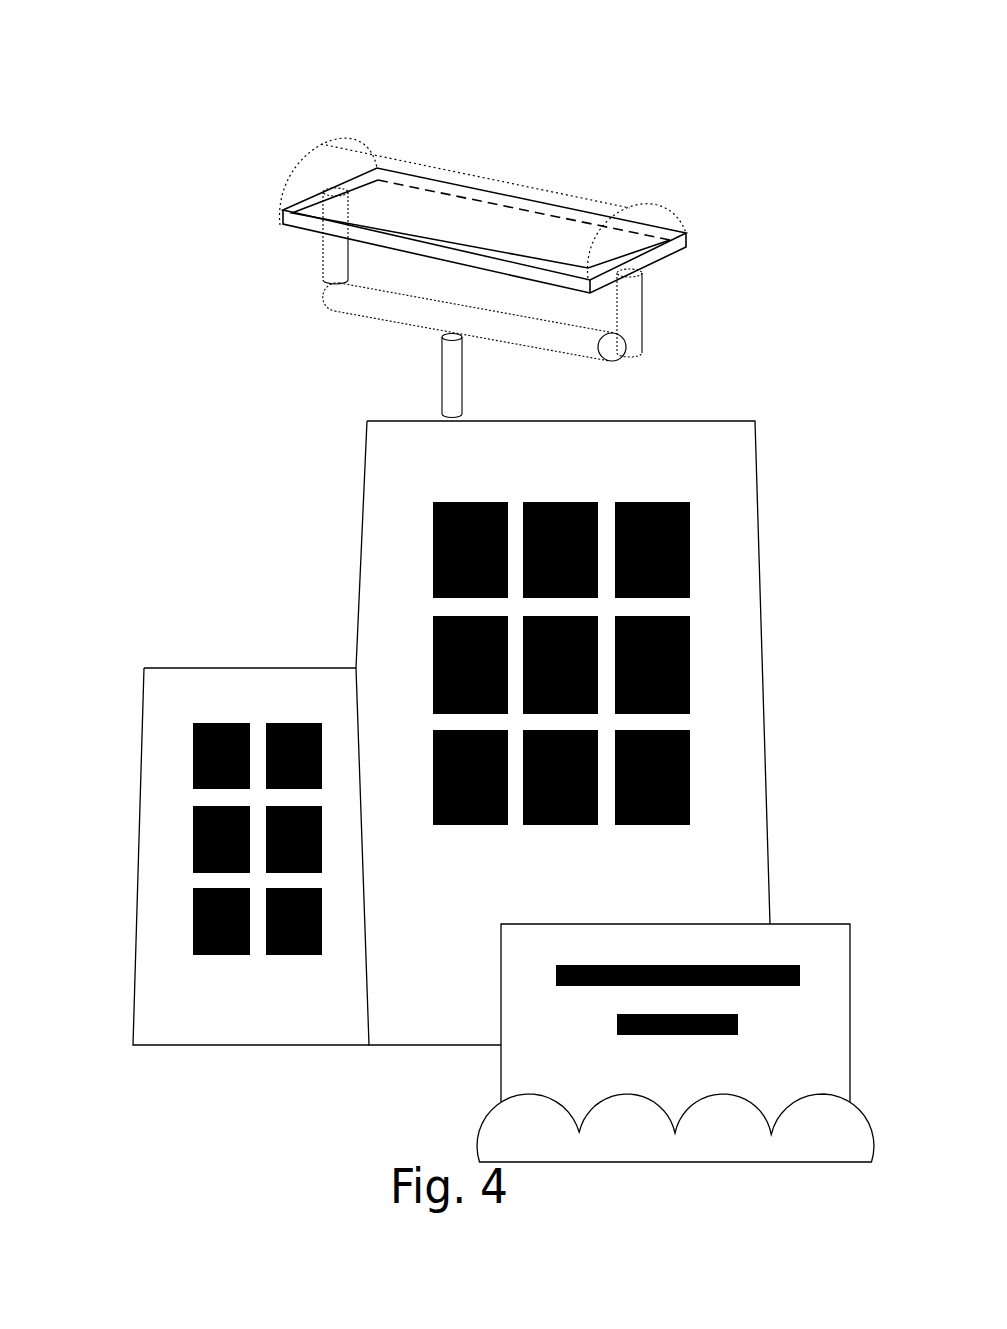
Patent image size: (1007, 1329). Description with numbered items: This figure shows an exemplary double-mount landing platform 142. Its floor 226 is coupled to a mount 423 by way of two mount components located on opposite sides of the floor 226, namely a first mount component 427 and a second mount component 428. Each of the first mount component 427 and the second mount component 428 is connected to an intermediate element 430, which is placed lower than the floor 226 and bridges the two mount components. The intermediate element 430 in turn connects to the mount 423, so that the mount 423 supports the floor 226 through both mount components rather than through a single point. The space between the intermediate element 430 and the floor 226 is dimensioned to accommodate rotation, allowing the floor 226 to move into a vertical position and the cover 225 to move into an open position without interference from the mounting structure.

The landing platform 142 is at (192, 58).
The cover 225 is at (262, 133).
The floor 226 is at (717, 163).
The second mount component 428 is at (277, 282).
The first mount component 427 is at (885, 318).
The intermediate element 430 is at (292, 372).
The mount 423 is at (622, 398).